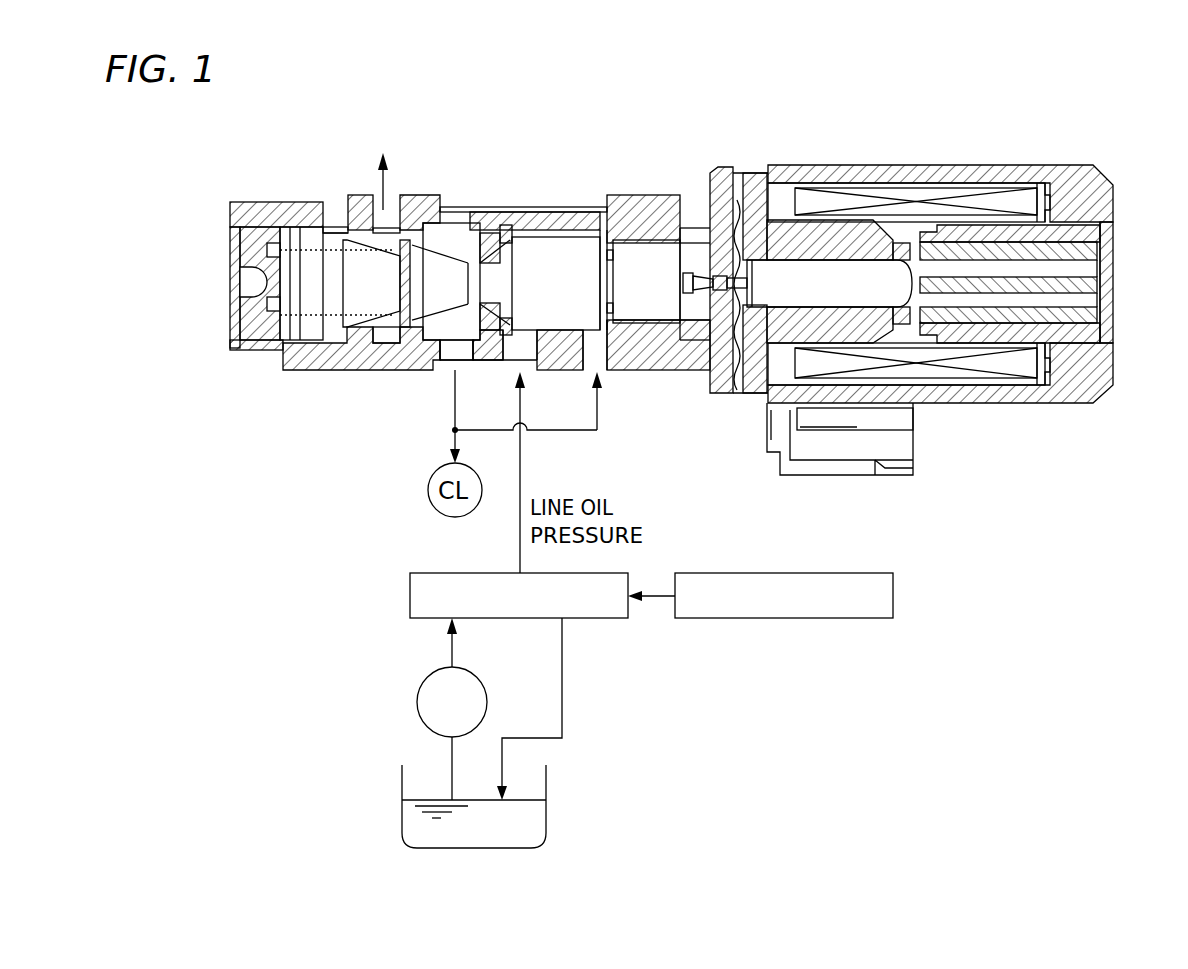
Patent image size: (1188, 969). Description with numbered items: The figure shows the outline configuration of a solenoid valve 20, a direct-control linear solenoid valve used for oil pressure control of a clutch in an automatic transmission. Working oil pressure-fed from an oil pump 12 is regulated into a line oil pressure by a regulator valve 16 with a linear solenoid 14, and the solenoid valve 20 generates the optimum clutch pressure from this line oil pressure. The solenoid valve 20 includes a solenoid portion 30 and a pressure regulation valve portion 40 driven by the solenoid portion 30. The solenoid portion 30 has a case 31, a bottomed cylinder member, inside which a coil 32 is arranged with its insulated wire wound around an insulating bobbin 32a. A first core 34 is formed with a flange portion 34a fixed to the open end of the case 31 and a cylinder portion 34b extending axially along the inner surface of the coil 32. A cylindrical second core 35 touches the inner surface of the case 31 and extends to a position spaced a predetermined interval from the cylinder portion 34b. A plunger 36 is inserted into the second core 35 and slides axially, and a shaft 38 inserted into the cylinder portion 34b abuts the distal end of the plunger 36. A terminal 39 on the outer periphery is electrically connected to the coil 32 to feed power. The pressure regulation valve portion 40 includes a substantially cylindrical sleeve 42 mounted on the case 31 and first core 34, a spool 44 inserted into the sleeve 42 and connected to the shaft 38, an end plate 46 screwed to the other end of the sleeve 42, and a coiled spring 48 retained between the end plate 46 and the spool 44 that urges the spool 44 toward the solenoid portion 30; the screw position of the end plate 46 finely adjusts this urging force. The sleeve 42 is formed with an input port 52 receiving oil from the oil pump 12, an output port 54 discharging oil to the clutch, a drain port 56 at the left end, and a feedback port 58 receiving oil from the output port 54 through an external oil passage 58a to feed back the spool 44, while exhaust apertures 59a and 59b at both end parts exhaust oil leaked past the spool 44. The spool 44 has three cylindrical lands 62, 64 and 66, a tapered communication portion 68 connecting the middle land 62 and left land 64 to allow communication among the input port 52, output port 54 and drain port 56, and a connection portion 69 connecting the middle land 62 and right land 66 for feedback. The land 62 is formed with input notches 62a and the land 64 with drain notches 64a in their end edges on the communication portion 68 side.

The oil pump 12 is at (417, 702).
The linear solenoid 14 is at (893, 598).
The regulator valve 16 is at (410, 598).
The solenoid valve 20 is at (710, 74).
The solenoid portion 30 is at (937, 110).
The case 31 is at (1103, 172).
The coil 32 is at (973, 190).
The insulating bobbin 32a is at (1043, 196).
The first core 34 is at (817, 117).
The flange portion 34a is at (755, 178).
The cylinder portion 34b is at (783, 225).
The second core 35 is at (1105, 228).
The plunger 36 is at (1100, 257).
The shaft 38 is at (847, 278).
The terminal 39 is at (830, 432).
The pressure regulation valve portion 40 is at (518, 116).
The sleeve 42 is at (645, 194).
The spool 44 is at (456, 227).
The end plate 46 is at (250, 243).
The coiled spring 48 is at (288, 243).
The input port 52 is at (525, 352).
The output port 54 is at (462, 352).
The drain port 56 is at (404, 238).
The feedback port 58 is at (602, 332).
The oil passage 58a is at (560, 433).
The exhaust aperture 59a is at (337, 225).
The exhaust aperture 59b is at (692, 228).
The land 62 is at (557, 257).
The input notches 62a is at (507, 236).
The land 64 is at (350, 332).
The drain notches 64a is at (384, 330).
The land 66 is at (632, 255).
The communication portion 68 is at (446, 345).
The connection portion 69 is at (663, 337).